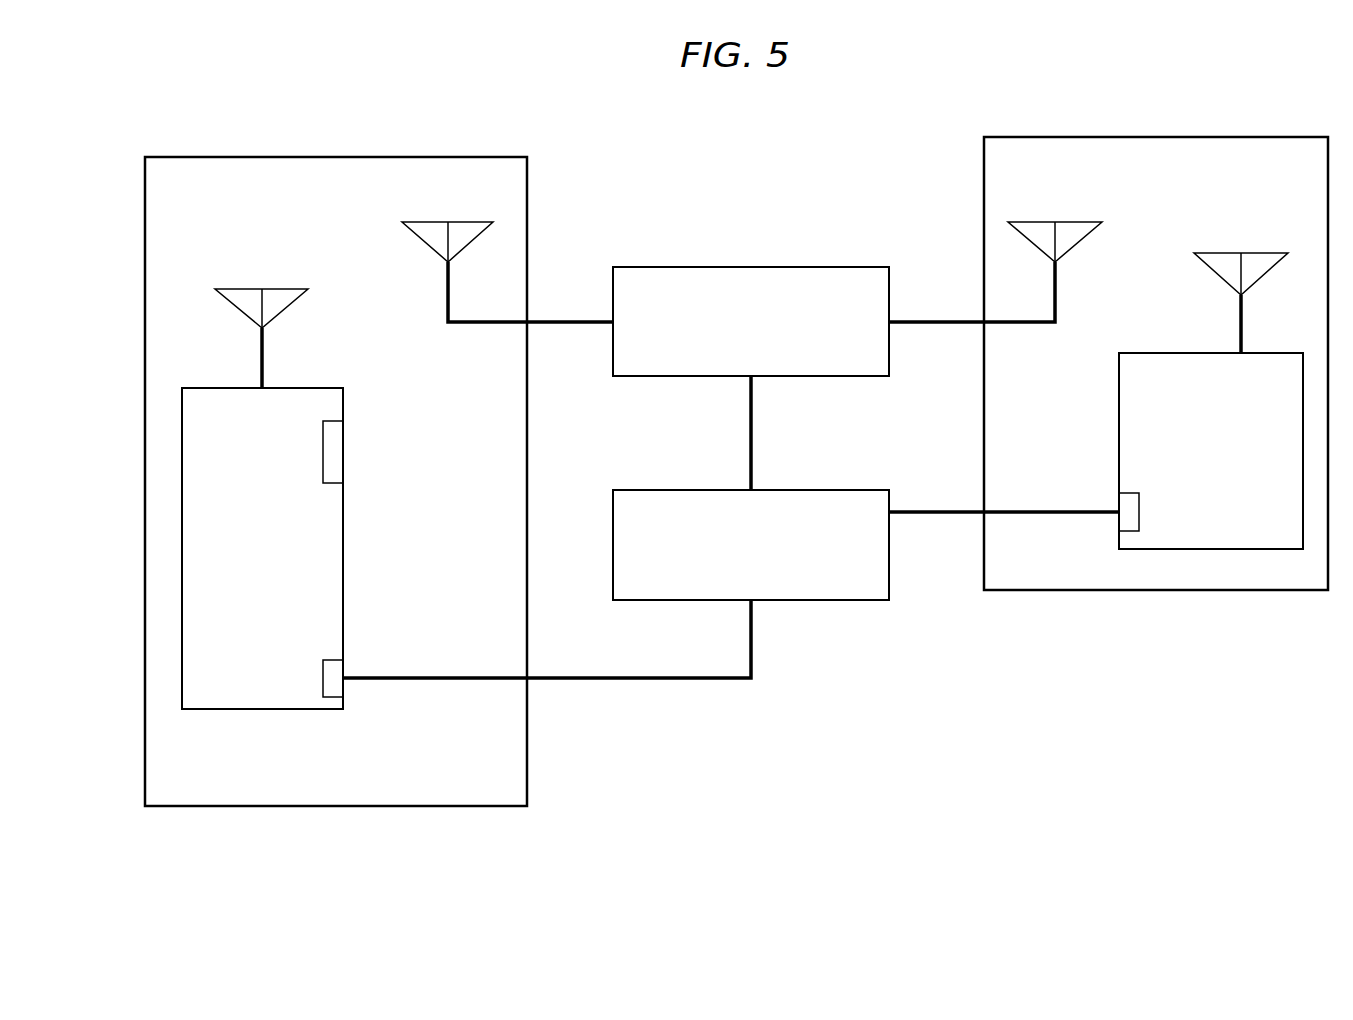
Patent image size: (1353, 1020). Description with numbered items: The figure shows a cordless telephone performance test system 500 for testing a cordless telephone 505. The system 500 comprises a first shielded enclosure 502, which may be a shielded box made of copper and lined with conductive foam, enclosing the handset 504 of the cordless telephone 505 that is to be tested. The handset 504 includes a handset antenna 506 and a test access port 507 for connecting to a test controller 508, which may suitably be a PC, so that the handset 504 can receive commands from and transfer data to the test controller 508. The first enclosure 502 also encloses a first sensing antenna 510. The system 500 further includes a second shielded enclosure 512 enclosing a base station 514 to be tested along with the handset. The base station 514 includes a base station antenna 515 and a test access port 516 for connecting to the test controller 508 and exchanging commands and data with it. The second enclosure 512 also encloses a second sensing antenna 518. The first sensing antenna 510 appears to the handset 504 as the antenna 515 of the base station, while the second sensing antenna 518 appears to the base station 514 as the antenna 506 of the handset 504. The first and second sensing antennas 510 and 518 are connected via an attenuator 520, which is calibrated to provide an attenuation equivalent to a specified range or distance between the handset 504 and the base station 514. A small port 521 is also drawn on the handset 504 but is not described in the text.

The cordless telephone performance test system 500 is at (481, 101).
The first shielded enclosure 502 is at (212, 157).
The handset 504 is at (312, 388).
The cordless telephone 505 is at (372, 537).
The handset antenna 506 is at (238, 289).
The test access port 507 is at (323, 677).
The test controller 508 is at (678, 490).
The first sensing antenna 510 is at (424, 222).
The second shielded enclosure 512 is at (1026, 137).
The base station 514 is at (1153, 353).
The base station antenna 515 is at (1262, 253).
The test access port 516 is at (1139, 512).
The second sensing antenna 518 is at (1073, 222).
The attenuator 520 is at (785, 266).
The first device port 521 is at (323, 455).